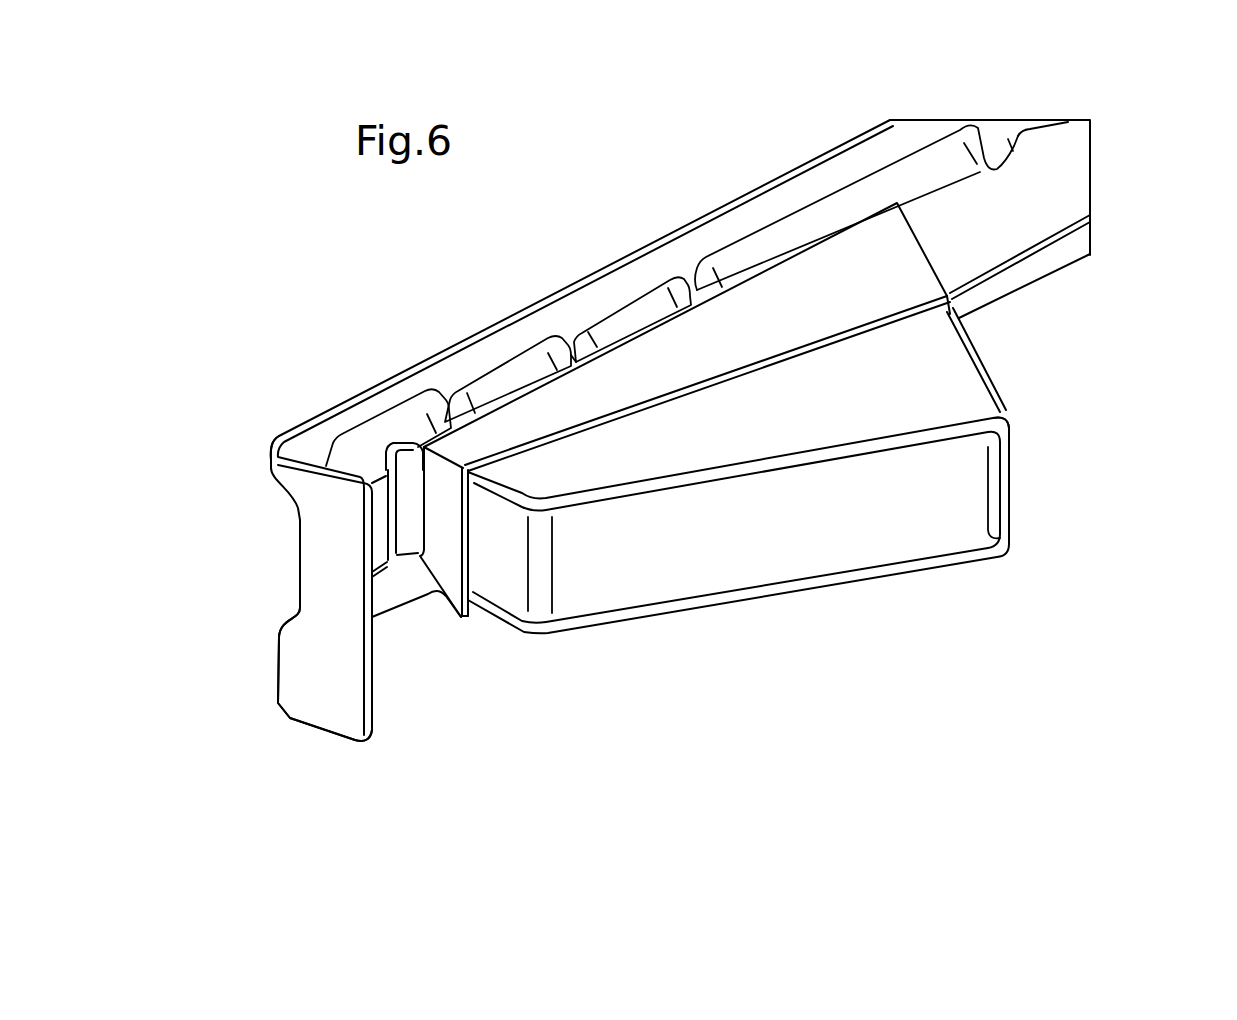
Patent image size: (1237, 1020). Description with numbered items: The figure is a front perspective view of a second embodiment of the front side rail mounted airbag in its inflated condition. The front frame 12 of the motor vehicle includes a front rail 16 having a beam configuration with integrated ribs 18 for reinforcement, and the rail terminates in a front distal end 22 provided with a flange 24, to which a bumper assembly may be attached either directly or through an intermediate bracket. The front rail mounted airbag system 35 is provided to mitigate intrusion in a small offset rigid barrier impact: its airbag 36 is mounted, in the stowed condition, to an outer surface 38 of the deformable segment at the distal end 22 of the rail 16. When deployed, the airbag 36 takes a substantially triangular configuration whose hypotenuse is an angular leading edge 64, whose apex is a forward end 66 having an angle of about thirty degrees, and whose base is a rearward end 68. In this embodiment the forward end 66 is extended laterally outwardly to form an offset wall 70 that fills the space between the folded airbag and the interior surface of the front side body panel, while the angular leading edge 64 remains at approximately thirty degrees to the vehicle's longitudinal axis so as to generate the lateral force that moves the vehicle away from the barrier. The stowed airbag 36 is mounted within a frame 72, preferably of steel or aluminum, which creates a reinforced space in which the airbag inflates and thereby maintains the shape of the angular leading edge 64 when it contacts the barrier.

The front frame 12 is at (1075, 175).
The front rail 16 is at (680, 252).
The integrated ribs 18 is at (1001, 135).
The front distal end 22 is at (327, 427).
The flange 24 is at (320, 716).
The front rail mounted airbag system 35 is at (813, 474).
The airbag 36 is at (800, 563).
The outer surface 38 is at (500, 380).
The angular leading edge 64 is at (915, 548).
The forward end 66 is at (542, 610).
The rearward end 68 is at (975, 407).
The offset wall 70 is at (513, 578).
The frame 72 is at (905, 258).